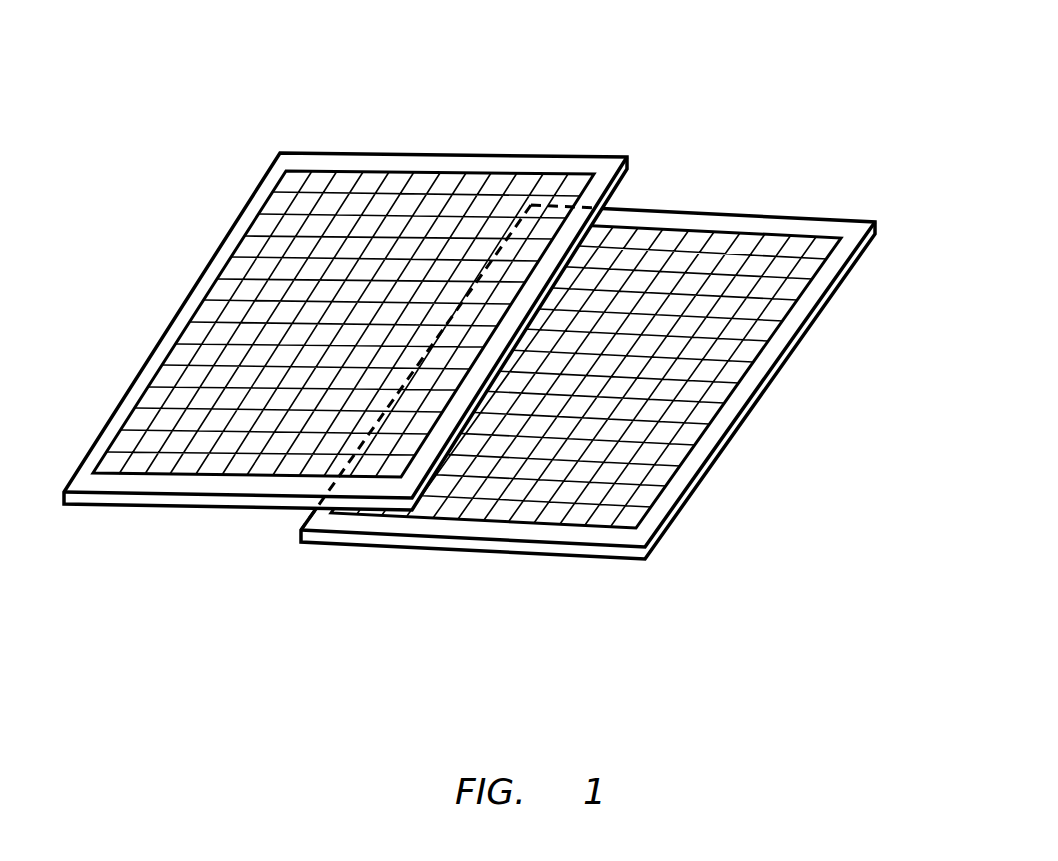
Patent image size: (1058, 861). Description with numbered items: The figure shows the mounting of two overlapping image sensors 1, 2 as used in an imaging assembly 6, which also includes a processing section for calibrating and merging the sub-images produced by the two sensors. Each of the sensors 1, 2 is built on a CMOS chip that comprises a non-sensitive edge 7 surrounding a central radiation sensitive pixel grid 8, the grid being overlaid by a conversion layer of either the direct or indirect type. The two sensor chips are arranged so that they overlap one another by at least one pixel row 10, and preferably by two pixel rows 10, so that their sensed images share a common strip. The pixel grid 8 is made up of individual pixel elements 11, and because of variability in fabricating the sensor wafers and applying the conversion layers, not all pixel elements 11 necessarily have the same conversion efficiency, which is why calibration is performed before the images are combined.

The image sensor 1 is at (457, 99).
The image sensor 2 is at (623, 382).
The imaging assembly 6 is at (650, 598).
The non-sensitive edge 7 is at (590, 162).
The radiation sensitive pixel grid 8 is at (472, 490).
The pixel row 10 is at (401, 332).
The pixel element 11 is at (623, 382).